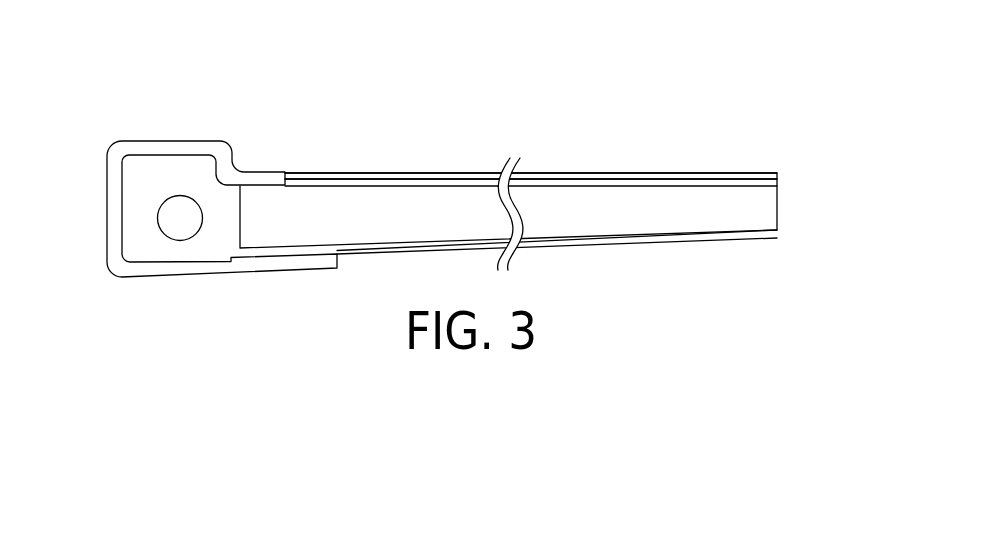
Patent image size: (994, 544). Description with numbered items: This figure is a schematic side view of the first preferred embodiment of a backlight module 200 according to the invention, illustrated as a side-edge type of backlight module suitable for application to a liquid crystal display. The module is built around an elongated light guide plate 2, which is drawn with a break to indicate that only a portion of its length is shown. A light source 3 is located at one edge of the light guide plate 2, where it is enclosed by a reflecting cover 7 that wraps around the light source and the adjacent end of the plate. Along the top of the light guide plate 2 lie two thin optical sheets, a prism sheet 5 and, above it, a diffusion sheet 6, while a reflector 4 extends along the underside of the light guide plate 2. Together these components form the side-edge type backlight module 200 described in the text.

The backlight module 200 is at (732, 81).
The reflecting cover 7 is at (198, 141).
The light source 3 is at (178, 218).
The light guide plate 2 is at (763, 207).
The diffusion sheet 6 is at (637, 177).
The prism sheet 5 is at (697, 183).
The reflector 4 is at (767, 237).